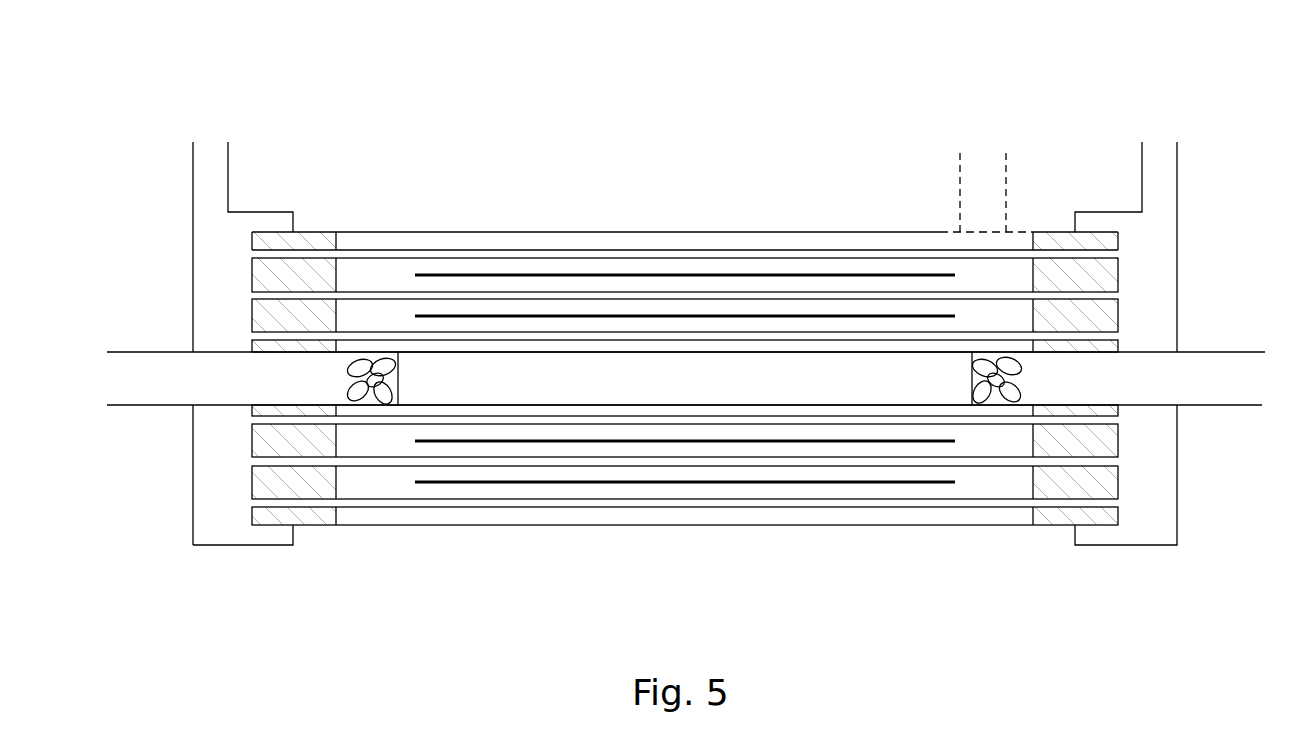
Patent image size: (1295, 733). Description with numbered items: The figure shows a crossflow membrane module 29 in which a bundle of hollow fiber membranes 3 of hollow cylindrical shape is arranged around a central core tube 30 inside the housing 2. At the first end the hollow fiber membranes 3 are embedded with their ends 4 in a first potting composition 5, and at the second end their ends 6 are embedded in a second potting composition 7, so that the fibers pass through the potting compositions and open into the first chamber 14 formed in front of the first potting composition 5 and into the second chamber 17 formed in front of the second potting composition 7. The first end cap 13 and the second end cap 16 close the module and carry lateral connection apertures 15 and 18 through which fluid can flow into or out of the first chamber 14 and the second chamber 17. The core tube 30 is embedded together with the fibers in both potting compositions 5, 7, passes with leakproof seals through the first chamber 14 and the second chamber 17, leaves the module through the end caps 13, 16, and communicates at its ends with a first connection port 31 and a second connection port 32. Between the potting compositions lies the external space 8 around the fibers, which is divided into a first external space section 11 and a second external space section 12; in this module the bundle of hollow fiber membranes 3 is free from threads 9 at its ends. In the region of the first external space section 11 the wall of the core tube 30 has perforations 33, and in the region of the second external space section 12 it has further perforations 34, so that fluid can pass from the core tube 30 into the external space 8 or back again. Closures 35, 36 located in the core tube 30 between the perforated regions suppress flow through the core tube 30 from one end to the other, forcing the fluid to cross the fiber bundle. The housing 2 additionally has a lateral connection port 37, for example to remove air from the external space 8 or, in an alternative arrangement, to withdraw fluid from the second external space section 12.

The housing 2 is at (708, 232).
The hollow fiber membranes 3 is at (850, 422).
The first end of hollow fiber membranes 4 is at (273, 500).
The first potting composition 5 is at (313, 480).
The second end of hollow fiber membranes 6 is at (1055, 503).
The second potting composition 7 is at (1102, 488).
The external space 8 is at (603, 517).
The threads 9 is at (682, 485).
The first external space section 11 is at (390, 480).
The second external space section 12 is at (993, 480).
The first end cap 13 is at (193, 500).
The first chamber 14 is at (230, 530).
The lateral connection aperture 15 is at (228, 175).
The second end cap 16 is at (1137, 545).
The second chamber 17 is at (1160, 233).
The lateral connection aperture 18 is at (1177, 172).
The membrane module 29 is at (641, 108).
The core tube 30 is at (573, 410).
The first connection port 31 is at (135, 405).
The second connection port 32 is at (1220, 352).
The perforations 33 is at (363, 358).
The perforations 34 is at (1013, 358).
The closure 35 is at (400, 356).
The closure 36 is at (960, 358).
The lateral connection port 37 is at (1007, 170).